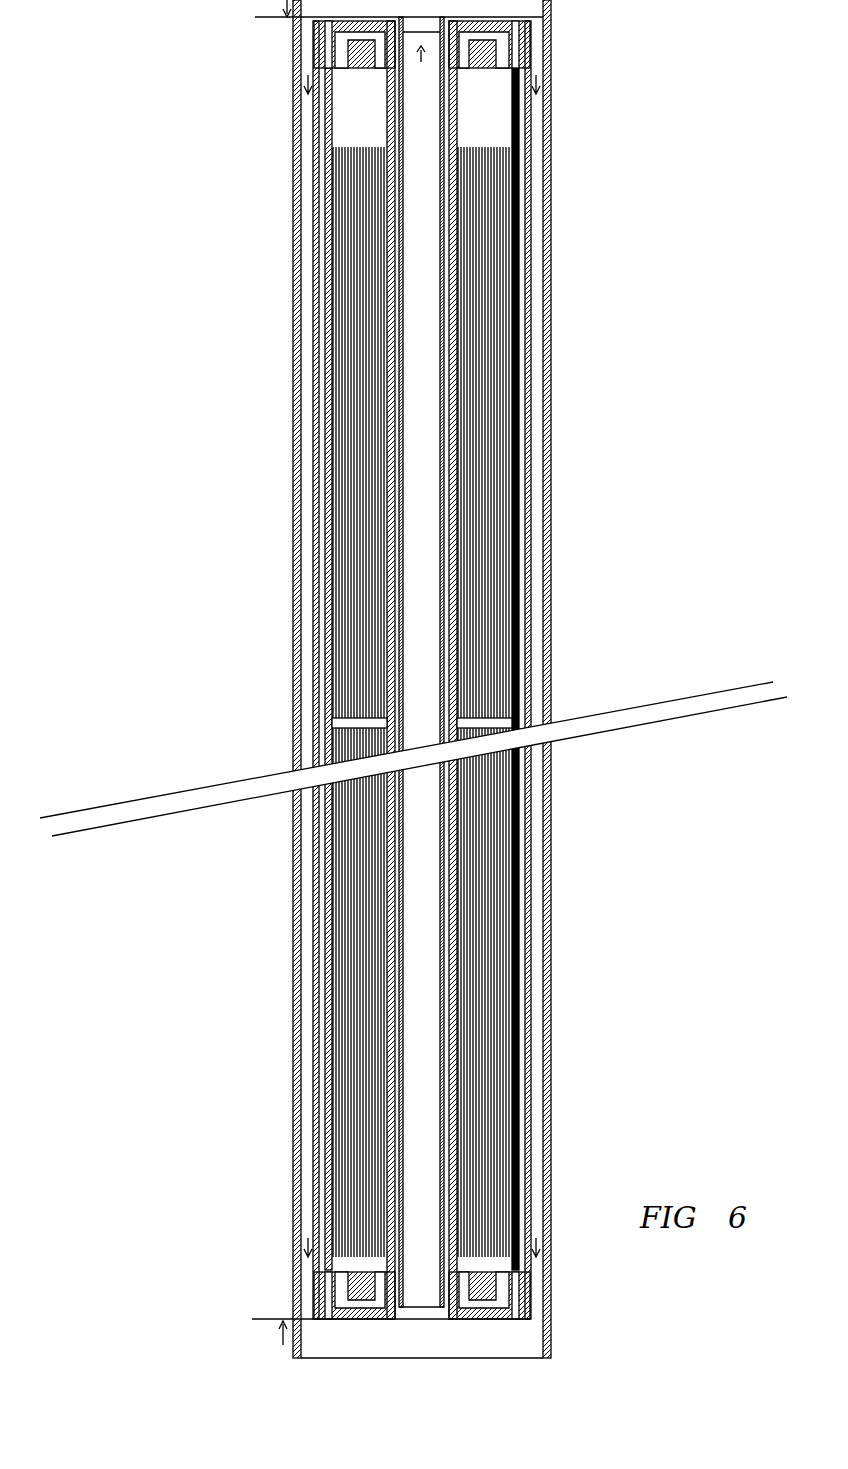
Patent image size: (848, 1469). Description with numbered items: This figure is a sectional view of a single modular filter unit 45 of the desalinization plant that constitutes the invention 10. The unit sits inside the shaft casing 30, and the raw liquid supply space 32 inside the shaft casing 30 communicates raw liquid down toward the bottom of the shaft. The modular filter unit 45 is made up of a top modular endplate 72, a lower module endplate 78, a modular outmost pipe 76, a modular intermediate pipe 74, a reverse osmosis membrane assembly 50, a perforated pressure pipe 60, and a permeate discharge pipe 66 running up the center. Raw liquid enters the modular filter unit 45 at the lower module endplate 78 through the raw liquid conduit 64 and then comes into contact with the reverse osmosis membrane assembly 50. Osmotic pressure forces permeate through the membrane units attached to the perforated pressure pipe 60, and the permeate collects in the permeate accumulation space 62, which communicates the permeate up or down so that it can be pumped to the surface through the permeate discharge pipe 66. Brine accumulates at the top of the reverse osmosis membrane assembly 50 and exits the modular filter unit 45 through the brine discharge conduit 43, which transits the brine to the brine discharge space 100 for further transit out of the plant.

The invention 10 is at (587, 162).
The shaft casing 30 is at (548, 373).
The raw liquid supply space 32 is at (536, 358).
The brine discharge conduit 43 is at (523, 1280).
The modular filter unit 45 is at (262, 1350).
The reverse osmosis membrane assembly 50 is at (507, 565).
The perforated pressure pipe 60 is at (453, 848).
The permeate accumulation space 62 is at (443, 873).
The raw liquid conduit 64 is at (515, 1302).
The permeate discharge pipe 66 is at (442, 895).
The top modular endplate 72 is at (532, 42).
The modular intermediate pipe 74 is at (515, 1052).
The modular outmost pipe 76 is at (527, 1203).
The lower module endplate 78 is at (313, 1288).
The brine discharge space 100 is at (520, 933).